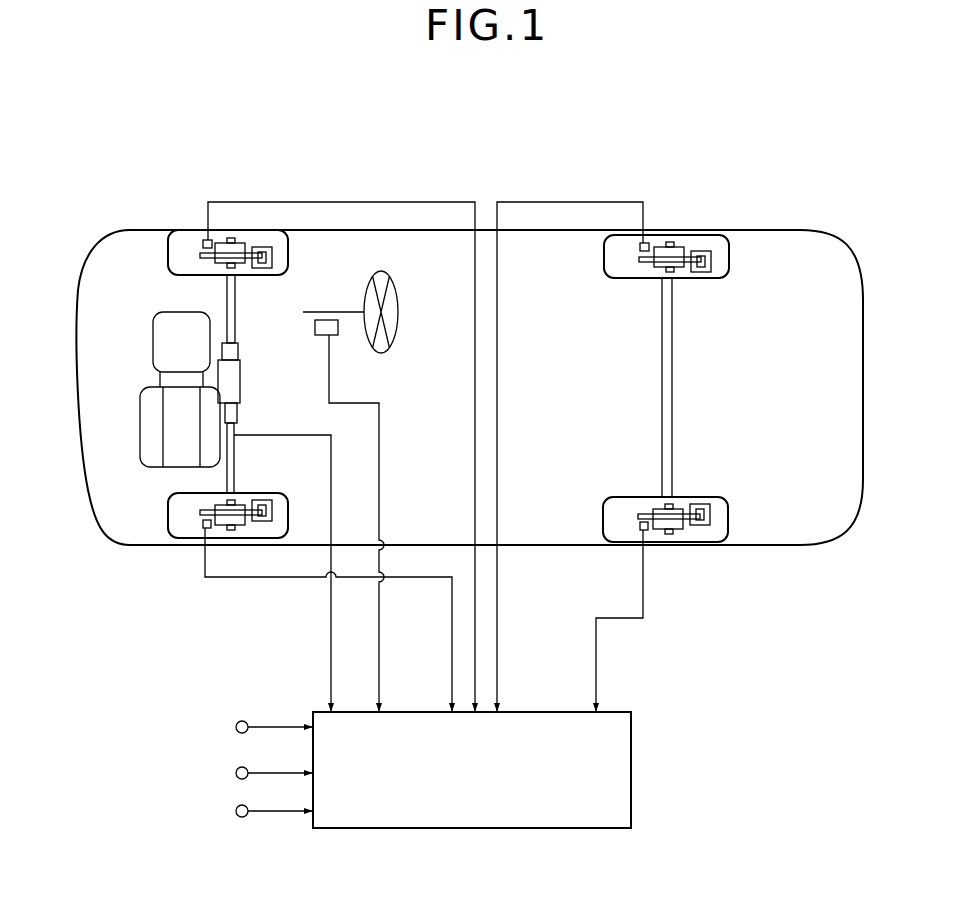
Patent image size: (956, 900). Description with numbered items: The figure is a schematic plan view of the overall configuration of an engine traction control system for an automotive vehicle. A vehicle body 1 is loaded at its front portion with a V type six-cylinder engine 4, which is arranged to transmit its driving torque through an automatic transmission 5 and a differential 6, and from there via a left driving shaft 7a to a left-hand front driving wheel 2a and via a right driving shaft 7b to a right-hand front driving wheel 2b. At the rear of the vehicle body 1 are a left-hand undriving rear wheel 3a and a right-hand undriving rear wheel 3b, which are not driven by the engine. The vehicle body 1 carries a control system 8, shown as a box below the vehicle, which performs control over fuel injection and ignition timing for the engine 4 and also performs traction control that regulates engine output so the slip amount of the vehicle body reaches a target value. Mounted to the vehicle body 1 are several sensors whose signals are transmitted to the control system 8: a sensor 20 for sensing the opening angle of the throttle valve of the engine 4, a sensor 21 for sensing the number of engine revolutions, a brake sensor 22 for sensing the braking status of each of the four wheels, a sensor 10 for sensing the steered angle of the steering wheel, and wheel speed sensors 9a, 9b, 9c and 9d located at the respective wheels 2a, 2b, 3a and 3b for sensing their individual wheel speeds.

The vehicle body 1 is at (398, 223).
The left-hand front driving wheel 2a is at (170, 520).
The right-hand front driving wheel 2b is at (168, 248).
The left-hand undriving rear wheel 3a is at (729, 520).
The right-hand undriving rear wheel 3b is at (730, 258).
The V type 6-cylinder engine 4 is at (142, 456).
The automatic transmission 5 is at (152, 340).
The differential 6 is at (240, 385).
The left driving shaft 7a is at (234, 459).
The right driving shaft 7b is at (236, 306).
The control system 8 is at (479, 828).
The wheel speed sensor 9a is at (205, 529).
The wheel speed sensor 9b is at (204, 240).
The wheel speed sensor 9c is at (645, 531).
The wheel speed sensor 9d is at (645, 242).
The steered angle sensor 10 is at (327, 318).
The throttle opening angle sensor 20 is at (236, 727).
The engine revolution sensor 21 is at (236, 773).
The brake sensor 22 is at (236, 811).